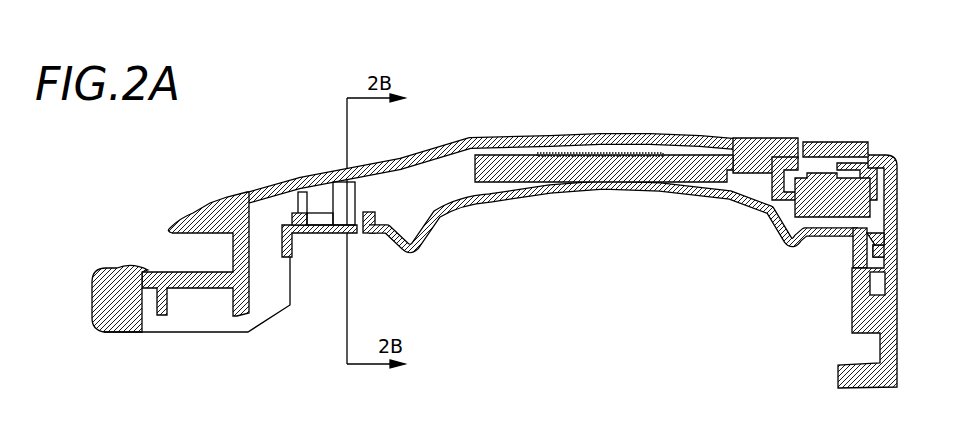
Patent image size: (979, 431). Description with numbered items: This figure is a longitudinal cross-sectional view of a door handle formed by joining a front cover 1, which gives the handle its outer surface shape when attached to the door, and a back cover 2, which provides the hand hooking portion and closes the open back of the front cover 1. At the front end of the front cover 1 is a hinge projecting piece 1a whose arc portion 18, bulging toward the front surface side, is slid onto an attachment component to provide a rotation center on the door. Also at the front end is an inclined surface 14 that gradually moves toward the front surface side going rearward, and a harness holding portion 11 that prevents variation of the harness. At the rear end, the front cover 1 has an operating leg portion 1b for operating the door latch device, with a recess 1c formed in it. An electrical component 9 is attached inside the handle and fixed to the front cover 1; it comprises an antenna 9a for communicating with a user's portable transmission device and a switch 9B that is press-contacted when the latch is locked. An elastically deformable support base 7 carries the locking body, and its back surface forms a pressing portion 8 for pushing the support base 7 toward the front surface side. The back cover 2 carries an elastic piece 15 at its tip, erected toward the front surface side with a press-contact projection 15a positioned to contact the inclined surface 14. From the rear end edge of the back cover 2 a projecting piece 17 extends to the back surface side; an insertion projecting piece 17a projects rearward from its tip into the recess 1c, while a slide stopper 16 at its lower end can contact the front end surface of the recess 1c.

The front cover 1 is at (437, 143).
The hinge projecting piece 1a is at (187, 292).
The operating leg portion 1b is at (897, 300).
The recess 1c is at (885, 250).
The back cover 2 is at (698, 205).
The support base 7 is at (317, 240).
The pressing portion 8 is at (337, 237).
The electrical component 9 is at (683, 190).
The antenna 9a is at (615, 172).
The switch 9B is at (840, 180).
The harness holding portion 11 is at (335, 190).
The inclined surface 14 is at (290, 192).
The elastic piece 15 is at (297, 205).
The press-contact projection 15a is at (296, 203).
The slide stopper 16 is at (860, 285).
The projecting piece 17 is at (852, 262).
The insertion projecting piece 17a is at (883, 238).
The arc portion 18 is at (138, 268).